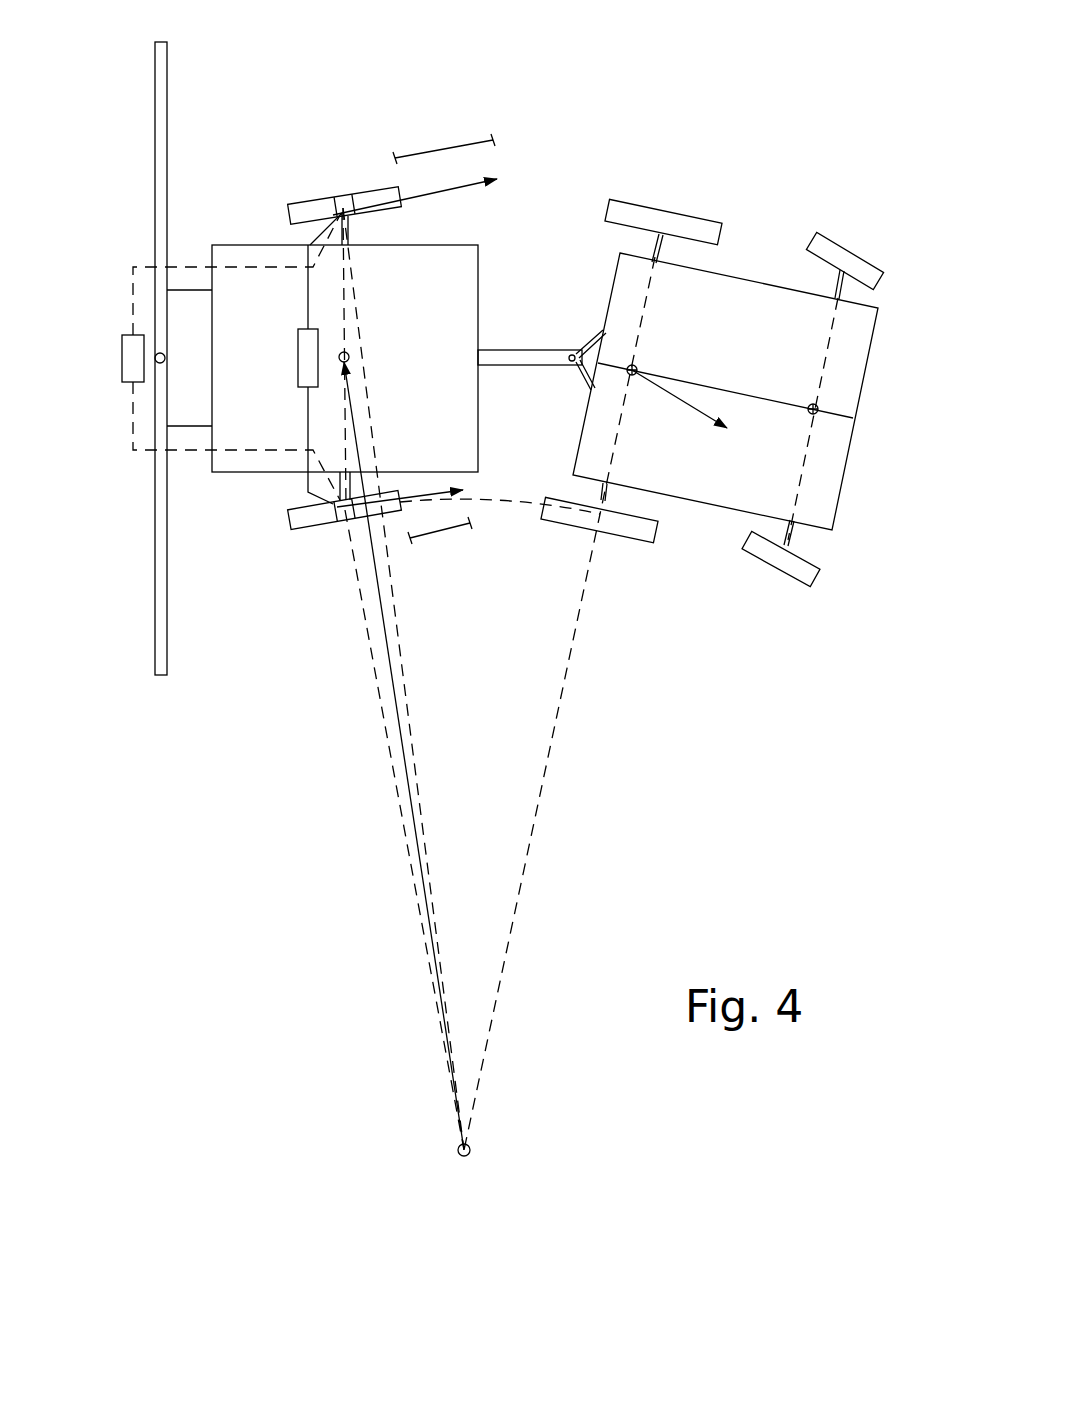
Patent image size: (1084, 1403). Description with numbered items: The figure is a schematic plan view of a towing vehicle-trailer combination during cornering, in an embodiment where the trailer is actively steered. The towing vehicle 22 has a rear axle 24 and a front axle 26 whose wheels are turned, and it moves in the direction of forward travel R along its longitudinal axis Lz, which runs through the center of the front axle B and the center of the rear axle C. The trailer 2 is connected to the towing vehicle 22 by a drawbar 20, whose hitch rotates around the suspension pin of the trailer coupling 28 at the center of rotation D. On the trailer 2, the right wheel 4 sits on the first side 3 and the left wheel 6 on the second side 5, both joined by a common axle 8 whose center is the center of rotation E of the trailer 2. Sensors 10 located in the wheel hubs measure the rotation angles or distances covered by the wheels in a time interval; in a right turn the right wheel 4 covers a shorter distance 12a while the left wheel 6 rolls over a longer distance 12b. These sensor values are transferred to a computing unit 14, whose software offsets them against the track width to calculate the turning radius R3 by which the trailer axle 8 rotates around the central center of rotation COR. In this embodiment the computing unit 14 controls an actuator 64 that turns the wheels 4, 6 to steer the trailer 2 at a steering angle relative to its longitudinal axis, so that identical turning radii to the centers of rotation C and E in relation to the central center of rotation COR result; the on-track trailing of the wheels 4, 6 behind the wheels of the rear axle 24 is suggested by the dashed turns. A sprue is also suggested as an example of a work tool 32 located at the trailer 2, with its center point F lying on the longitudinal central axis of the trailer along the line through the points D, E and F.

The trailer 2 is at (228, 243).
The first side 3 is at (250, 473).
The right wheel 4 is at (292, 527).
The second side 5 is at (262, 243).
The left wheel 6 is at (302, 213).
The common axle 8 is at (347, 276).
The sensors 10 is at (341, 212).
The shorter distance 12a is at (441, 537).
The longer distance 12b is at (440, 145).
The computing unit 14 is at (130, 358).
The drawbar 20 is at (512, 350).
The towing vehicle 22 is at (855, 348).
The rear axle 24 is at (670, 195).
The front axle 26 is at (850, 228).
The trailer coupling 28 is at (600, 348).
The work tool 32 is at (160, 597).
The actuator 64 is at (298, 355).
The center of rotation of the trailer E is at (347, 354).
The center point of the work tool F is at (160, 364).
The center of rotation in the trailer coupling D is at (570, 357).
The center of the rear axle C is at (636, 366).
The center of the front axle B is at (818, 407).
The direction of forward travel R is at (677, 398).
The turning radius R3 is at (393, 688).
The longitudinal axis of the towing vehicle Lz is at (713, 388).
The central center of rotation COR is at (463, 1173).